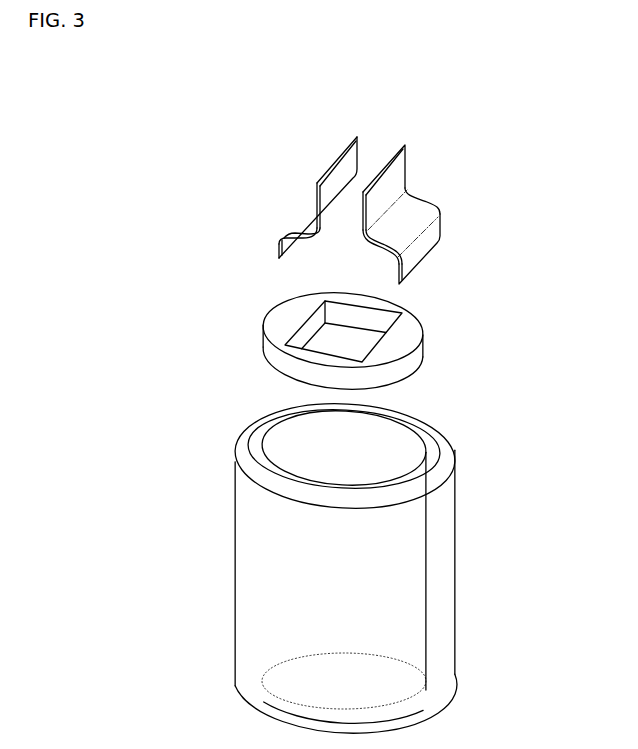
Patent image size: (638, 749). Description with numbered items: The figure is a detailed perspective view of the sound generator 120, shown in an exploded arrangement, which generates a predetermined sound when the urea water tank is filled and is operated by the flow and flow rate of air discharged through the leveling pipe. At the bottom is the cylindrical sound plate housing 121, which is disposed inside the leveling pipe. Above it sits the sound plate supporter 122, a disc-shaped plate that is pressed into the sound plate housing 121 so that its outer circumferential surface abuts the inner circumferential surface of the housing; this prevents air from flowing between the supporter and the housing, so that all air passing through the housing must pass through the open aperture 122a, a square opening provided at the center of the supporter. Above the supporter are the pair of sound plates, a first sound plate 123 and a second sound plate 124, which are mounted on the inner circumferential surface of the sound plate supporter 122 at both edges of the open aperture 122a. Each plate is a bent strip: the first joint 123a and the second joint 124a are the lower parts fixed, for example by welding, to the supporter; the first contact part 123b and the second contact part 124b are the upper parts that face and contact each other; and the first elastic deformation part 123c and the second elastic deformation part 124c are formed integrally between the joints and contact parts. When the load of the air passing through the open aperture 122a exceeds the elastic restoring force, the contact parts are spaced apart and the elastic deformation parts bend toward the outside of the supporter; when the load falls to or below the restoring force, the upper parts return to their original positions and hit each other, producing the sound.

The sound generator 120 is at (173, 97).
The sound plate housing 121 is at (220, 499).
The sound plate supporter 122 is at (319, 338).
The open aperture 122a is at (352, 350).
The first sound plate 123 is at (259, 187).
The first joint 123a is at (279, 252).
The first contact part 123b is at (313, 185).
The first elastic deformation part 123c is at (300, 226).
The second sound plate 124 is at (446, 180).
The second joint 124a is at (422, 247).
The second contact part 124b is at (391, 168).
The second elastic deformation part 124c is at (409, 211).